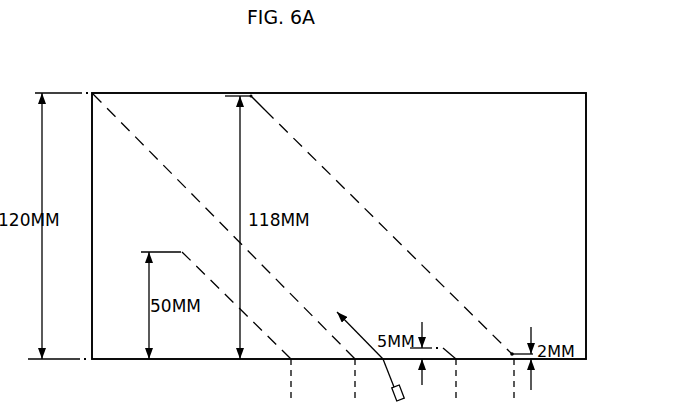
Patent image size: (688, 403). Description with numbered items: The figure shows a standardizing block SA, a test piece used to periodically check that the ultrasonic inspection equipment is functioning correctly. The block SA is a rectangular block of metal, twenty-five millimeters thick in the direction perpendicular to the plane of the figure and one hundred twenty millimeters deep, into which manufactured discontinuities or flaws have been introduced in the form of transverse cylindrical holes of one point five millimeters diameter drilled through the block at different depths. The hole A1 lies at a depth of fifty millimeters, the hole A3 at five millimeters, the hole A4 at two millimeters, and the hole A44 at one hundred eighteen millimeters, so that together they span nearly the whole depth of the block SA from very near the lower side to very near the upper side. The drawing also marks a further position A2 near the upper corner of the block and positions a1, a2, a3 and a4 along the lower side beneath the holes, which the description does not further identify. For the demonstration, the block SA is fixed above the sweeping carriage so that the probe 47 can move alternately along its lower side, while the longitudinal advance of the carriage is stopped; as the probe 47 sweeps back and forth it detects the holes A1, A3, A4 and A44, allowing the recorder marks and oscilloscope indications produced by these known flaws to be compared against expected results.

The probe 47 is at (403, 395).
The hole A1 is at (233, 296).
The reference point A2 on surface A2 is at (221, 212).
The hole A3 is at (453, 345).
The hole A4 is at (519, 340).
The hole A44 is at (381, 225).
The standardizing block SA is at (418, 118).
The projection of A1 a1 is at (301, 381).
The projection of A2 a2 is at (365, 381).
The projection of A3 a3 is at (465, 381).
The projection of A4 a4 is at (502, 381).